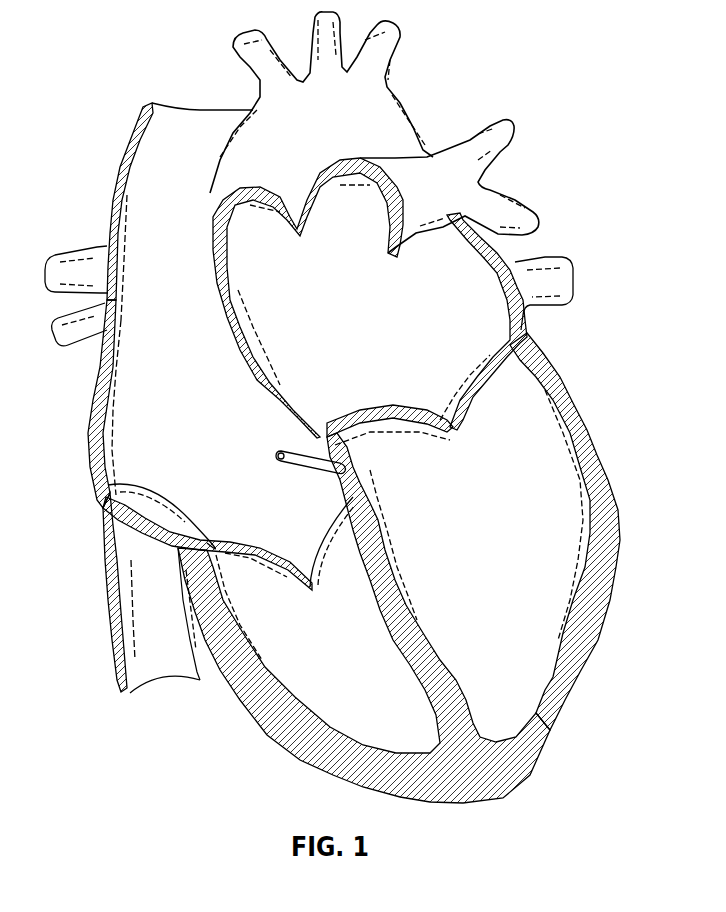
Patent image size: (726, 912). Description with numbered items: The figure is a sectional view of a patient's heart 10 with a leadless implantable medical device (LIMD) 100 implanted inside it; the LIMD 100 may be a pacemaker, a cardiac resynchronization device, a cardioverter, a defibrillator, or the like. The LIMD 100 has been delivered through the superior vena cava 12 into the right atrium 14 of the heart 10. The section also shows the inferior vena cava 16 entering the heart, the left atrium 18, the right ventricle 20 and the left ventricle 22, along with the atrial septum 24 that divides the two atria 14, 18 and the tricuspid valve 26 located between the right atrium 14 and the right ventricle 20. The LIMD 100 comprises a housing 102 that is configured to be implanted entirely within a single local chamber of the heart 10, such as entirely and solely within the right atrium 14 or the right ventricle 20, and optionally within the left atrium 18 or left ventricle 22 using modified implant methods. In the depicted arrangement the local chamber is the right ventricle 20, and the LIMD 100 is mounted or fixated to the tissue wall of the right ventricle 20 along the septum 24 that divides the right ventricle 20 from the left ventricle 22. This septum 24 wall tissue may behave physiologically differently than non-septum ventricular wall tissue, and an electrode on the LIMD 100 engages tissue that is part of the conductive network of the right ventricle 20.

The heart 10 is at (459, 101).
The superior vena cava 12 is at (161, 143).
The right atrium 14 is at (119, 429).
The inferior vena cava 16 is at (120, 565).
The left atrium 18 is at (470, 275).
The right ventricle 20 is at (368, 720).
The left ventricle 22 is at (550, 612).
The atrial septum 24 is at (219, 300).
The tricuspid valve 26 is at (313, 537).
The leadless implantable medical device 100 is at (269, 427).
The housing 102 is at (306, 462).